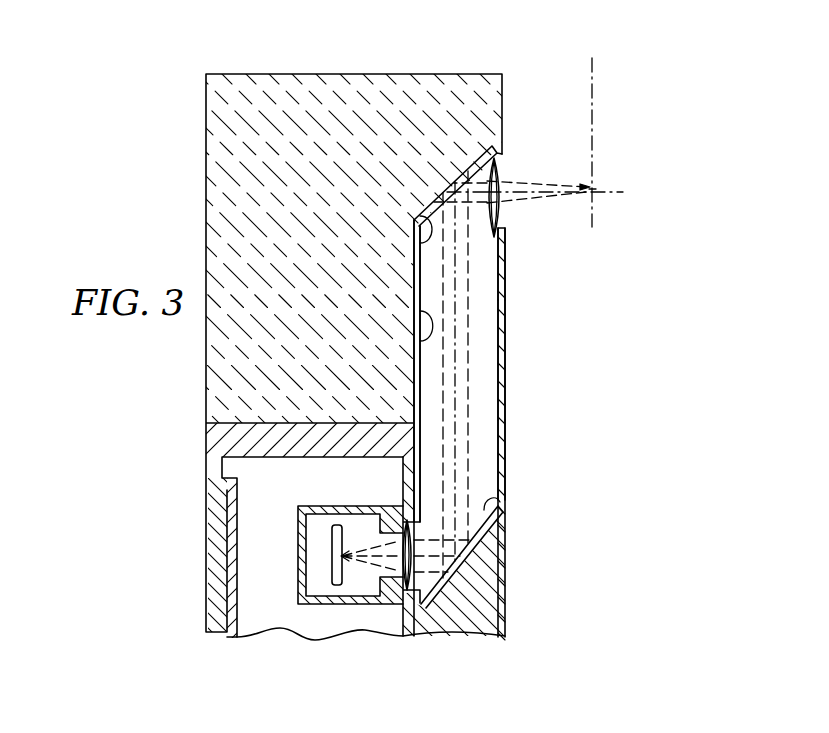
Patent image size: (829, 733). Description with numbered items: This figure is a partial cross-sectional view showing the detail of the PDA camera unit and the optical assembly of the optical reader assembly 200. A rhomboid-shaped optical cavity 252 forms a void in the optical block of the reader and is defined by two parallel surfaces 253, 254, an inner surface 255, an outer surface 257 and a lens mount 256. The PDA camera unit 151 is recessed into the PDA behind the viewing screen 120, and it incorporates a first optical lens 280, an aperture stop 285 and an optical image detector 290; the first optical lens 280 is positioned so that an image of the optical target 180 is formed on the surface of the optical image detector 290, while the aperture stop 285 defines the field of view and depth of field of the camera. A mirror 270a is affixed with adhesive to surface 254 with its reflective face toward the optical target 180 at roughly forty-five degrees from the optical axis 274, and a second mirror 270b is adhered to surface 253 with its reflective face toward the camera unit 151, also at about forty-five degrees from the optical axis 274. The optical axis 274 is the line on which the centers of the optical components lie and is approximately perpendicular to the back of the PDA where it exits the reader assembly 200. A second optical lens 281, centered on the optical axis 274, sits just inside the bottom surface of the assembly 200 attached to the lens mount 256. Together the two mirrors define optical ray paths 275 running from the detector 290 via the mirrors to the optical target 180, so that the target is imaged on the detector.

The optical reader assembly 200 is at (382, 70).
The viewing screen 120 is at (208, 572).
The PDA camera unit 151 is at (320, 506).
The optical target 180 is at (592, 108).
The optical cavity 252 is at (484, 372).
The surface 253 is at (500, 528).
The surface 254 is at (435, 182).
The inner surface 255 is at (420, 324).
The lens mount 256 is at (505, 244).
The outer surface 257 is at (504, 430).
The mirror 270a is at (414, 243).
The mirror 270b is at (500, 502).
The optical axis 274 is at (606, 192).
The optical ray paths 275 is at (543, 198).
The first optical lens 280 is at (407, 592).
The second optical lens 281 is at (505, 168).
The aperture stop 285 is at (372, 600).
The optical image detector 290 is at (336, 556).